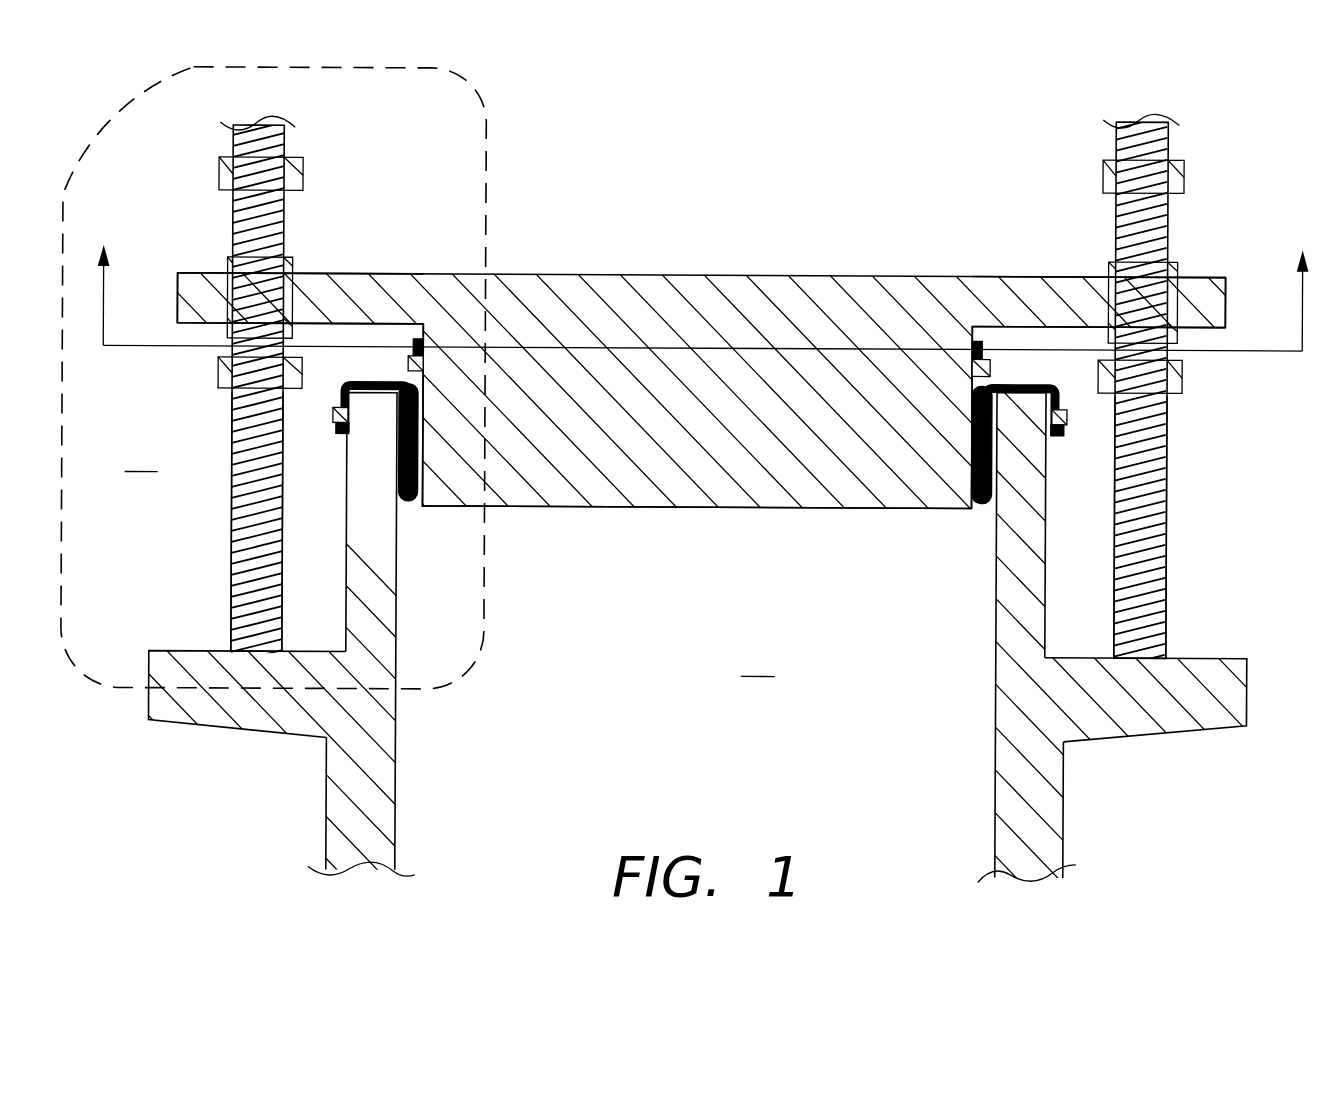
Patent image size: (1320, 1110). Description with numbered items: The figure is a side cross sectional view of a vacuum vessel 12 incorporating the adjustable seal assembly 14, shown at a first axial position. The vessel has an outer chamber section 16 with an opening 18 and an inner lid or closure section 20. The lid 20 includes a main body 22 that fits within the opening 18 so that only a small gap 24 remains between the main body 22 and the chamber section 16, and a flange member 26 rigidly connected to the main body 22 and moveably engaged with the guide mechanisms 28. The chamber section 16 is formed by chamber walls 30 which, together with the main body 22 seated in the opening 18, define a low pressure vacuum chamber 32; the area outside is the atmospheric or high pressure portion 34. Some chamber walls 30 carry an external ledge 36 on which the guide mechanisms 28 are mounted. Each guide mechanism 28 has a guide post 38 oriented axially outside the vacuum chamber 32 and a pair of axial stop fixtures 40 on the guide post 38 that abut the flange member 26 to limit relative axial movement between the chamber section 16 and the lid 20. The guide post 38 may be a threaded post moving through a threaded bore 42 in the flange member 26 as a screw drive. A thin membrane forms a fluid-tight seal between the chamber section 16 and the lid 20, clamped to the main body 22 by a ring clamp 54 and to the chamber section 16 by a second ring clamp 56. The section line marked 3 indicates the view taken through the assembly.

The vacuum vessel 12 is at (1208, 72).
The adjustable seal assembly 14 is at (485, 128).
The outer chamber section 16 is at (660, 634).
The opening 18 is at (695, 532).
The lid or closure section 20 is at (715, 330).
The main body 22 is at (714, 442).
The small gap 24 is at (698, 462).
The flange member 26 is at (337, 282).
The guide mechanism 28 is at (703, 376).
The chamber wall 30 is at (397, 793).
The vacuum chamber 32 is at (688, 714).
The atmospheric or high pressure portion 34 is at (85, 438).
The external ledge 36 is at (200, 722).
The guide post 38 is at (232, 510).
The axial stop fixture 40 is at (220, 162).
The threaded bore 42 is at (237, 250).
The ring clamp 54 is at (408, 364).
The second ring clamp 56 is at (333, 417).
The section line 3- 3 is at (702, 284).